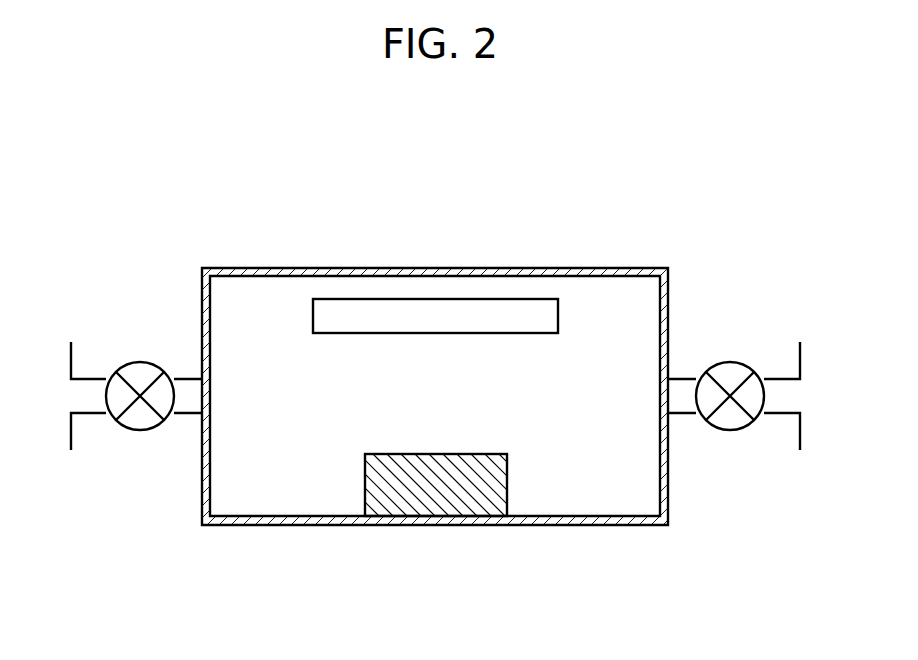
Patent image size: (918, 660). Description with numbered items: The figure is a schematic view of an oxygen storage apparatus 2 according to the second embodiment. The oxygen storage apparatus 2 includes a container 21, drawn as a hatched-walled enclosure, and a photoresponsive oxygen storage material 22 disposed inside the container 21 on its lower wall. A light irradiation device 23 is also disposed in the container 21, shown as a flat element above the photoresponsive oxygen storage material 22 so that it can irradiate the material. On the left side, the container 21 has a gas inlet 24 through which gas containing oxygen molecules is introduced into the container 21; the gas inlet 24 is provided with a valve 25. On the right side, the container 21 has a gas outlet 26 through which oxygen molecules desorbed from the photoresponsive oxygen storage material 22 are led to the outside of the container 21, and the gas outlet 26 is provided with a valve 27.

The oxygen storage apparatus 2 is at (627, 180).
The container 21 is at (383, 268).
The photoresponsive oxygen storage material 22 is at (435, 498).
The light irradiation device 23 is at (450, 317).
The gas inlet 24 is at (90, 379).
The valve 25 is at (142, 362).
The gas outlet 26 is at (776, 379).
The valve 27 is at (723, 361).